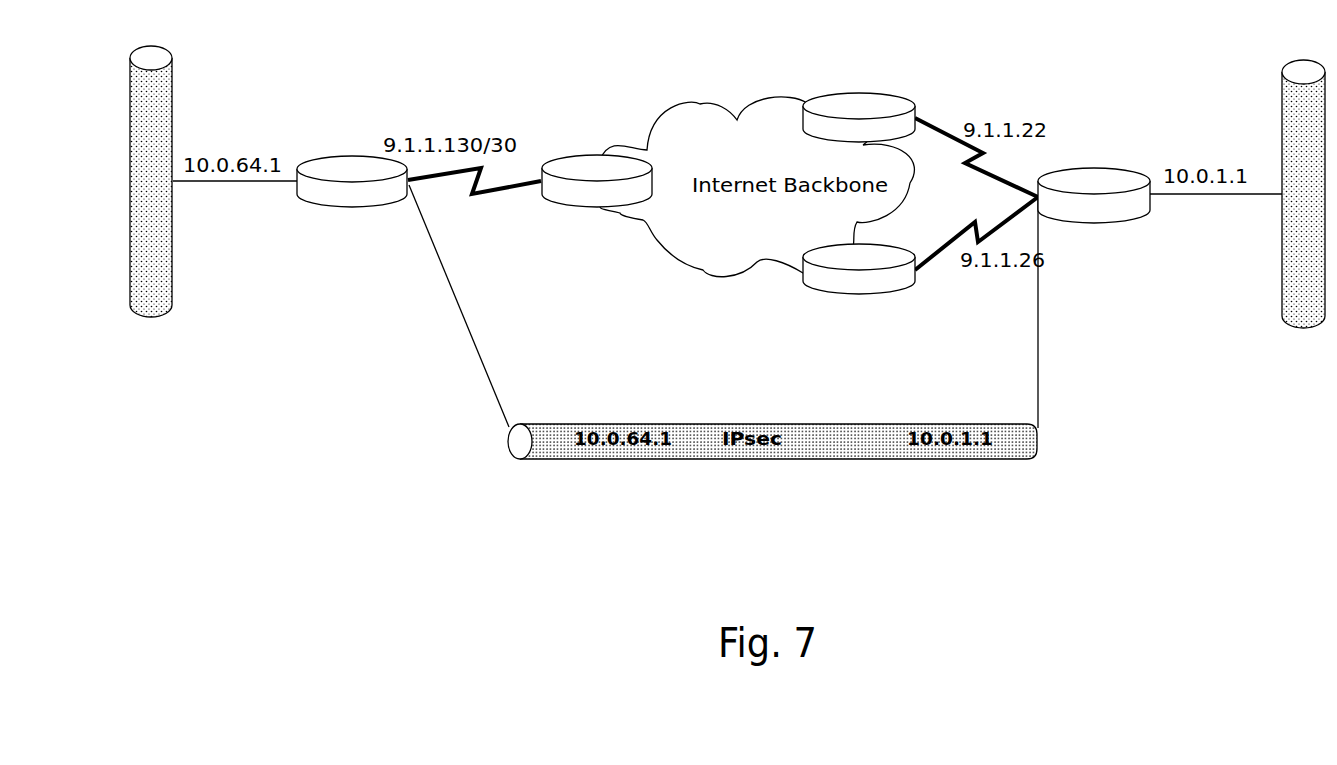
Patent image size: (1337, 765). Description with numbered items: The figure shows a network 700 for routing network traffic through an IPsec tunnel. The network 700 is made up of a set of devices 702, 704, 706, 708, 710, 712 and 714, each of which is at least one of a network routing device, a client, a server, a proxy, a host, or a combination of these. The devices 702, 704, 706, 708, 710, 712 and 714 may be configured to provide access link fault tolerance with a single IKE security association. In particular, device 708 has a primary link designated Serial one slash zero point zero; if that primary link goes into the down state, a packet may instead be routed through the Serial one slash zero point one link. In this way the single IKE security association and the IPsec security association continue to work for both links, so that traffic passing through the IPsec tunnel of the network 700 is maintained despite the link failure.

The network 700 is at (340, 495).
The device 702 is at (150, 318).
The device 704 is at (1302, 330).
The device 706 is at (352, 207).
The device 708 is at (1094, 223).
The device 710 is at (597, 207).
The device 712 is at (859, 295).
The device 714 is at (859, 93).